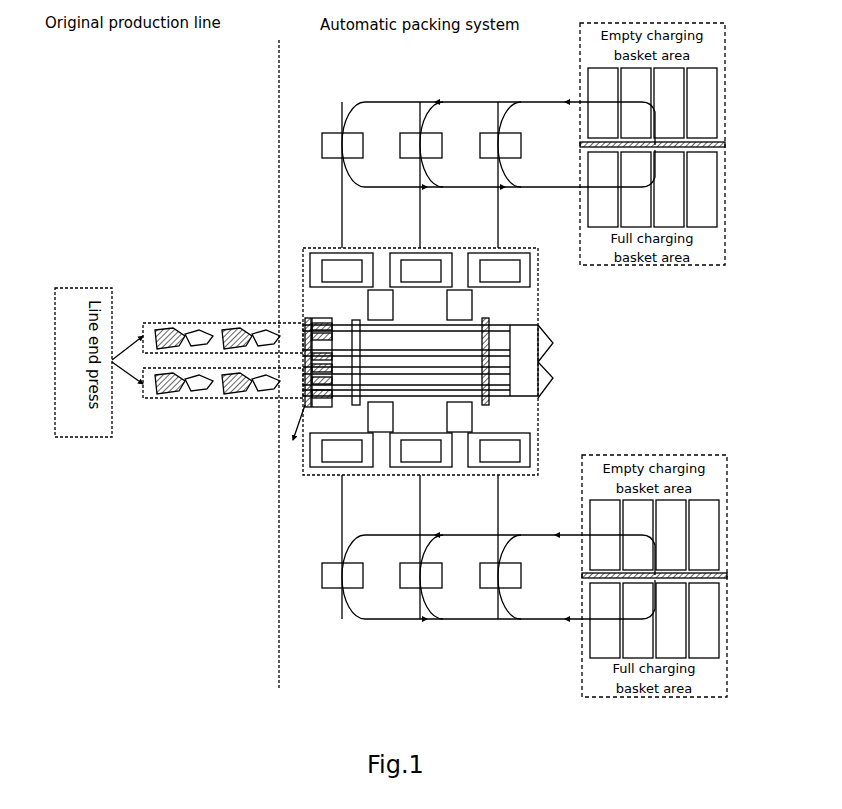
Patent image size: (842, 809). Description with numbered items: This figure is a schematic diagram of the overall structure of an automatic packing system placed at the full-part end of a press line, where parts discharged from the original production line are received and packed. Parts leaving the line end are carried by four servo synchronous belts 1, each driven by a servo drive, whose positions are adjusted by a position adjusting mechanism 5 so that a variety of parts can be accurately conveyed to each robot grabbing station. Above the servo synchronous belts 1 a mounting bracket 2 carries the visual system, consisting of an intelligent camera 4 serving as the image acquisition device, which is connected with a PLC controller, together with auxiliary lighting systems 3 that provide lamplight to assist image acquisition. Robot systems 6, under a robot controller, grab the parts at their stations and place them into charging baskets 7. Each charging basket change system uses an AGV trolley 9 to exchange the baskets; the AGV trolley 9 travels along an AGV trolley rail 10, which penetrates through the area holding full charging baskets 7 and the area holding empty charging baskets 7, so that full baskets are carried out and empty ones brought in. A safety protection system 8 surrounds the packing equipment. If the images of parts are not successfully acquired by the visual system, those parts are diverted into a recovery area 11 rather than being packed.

The servo synchronous belt 1 is at (278, 325).
The mounting bracket 2 is at (308, 324).
The auxiliary lighting system 3 is at (322, 322).
The intelligent camera 4 is at (314, 322).
The position adjusting mechanism 5 is at (354, 322).
The robot system 6 is at (372, 302).
The charging basket 7 is at (317, 250).
The safety protection system 8 is at (300, 282).
The AGV trolley 9 is at (333, 140).
The AGV trolley rail 10 is at (366, 101).
The recovery area 11 is at (540, 330).